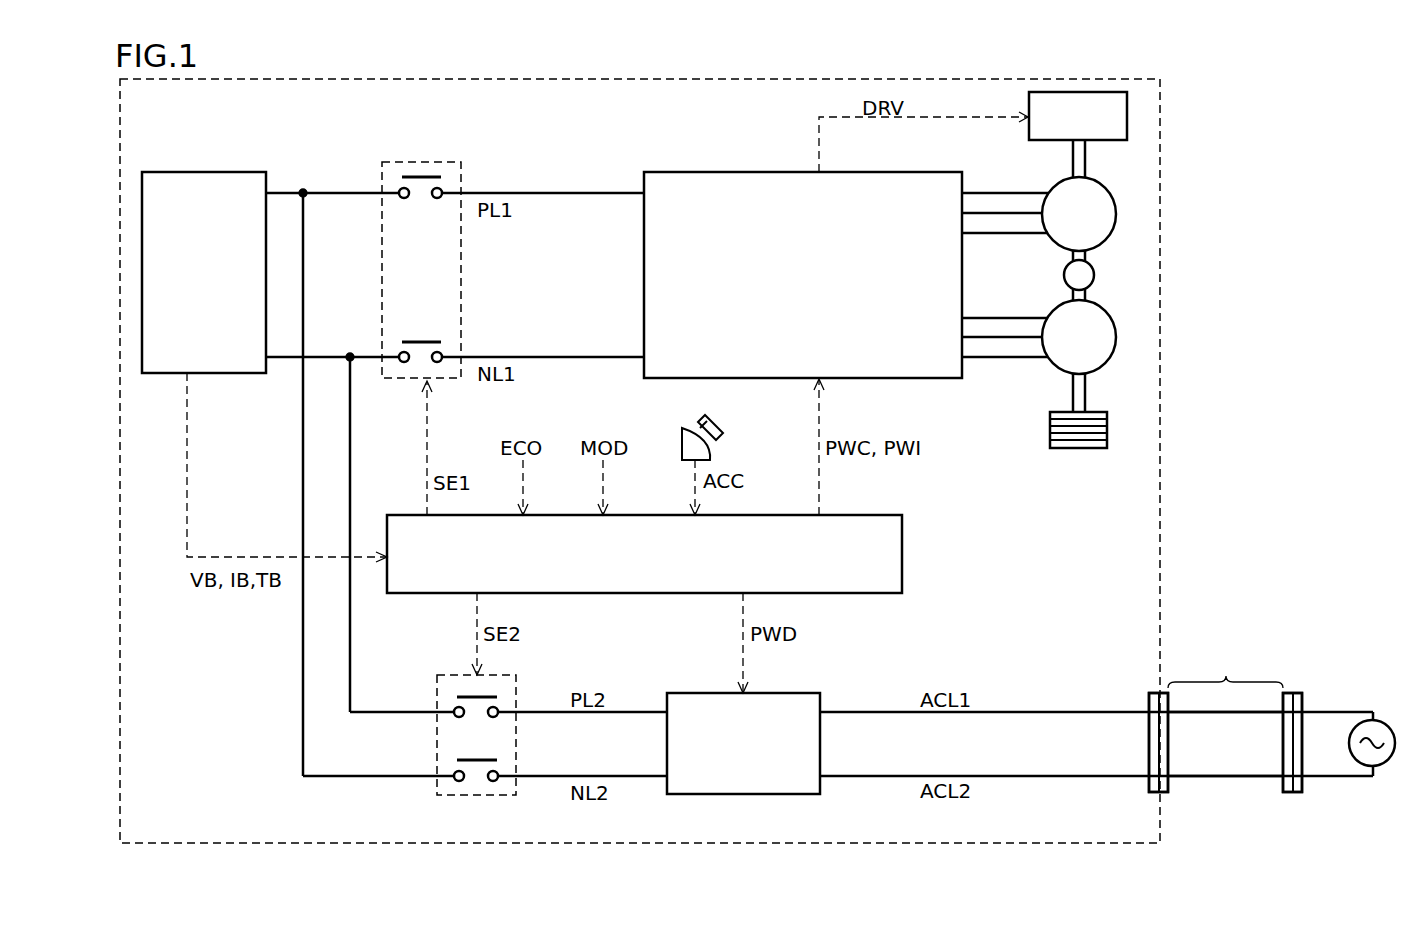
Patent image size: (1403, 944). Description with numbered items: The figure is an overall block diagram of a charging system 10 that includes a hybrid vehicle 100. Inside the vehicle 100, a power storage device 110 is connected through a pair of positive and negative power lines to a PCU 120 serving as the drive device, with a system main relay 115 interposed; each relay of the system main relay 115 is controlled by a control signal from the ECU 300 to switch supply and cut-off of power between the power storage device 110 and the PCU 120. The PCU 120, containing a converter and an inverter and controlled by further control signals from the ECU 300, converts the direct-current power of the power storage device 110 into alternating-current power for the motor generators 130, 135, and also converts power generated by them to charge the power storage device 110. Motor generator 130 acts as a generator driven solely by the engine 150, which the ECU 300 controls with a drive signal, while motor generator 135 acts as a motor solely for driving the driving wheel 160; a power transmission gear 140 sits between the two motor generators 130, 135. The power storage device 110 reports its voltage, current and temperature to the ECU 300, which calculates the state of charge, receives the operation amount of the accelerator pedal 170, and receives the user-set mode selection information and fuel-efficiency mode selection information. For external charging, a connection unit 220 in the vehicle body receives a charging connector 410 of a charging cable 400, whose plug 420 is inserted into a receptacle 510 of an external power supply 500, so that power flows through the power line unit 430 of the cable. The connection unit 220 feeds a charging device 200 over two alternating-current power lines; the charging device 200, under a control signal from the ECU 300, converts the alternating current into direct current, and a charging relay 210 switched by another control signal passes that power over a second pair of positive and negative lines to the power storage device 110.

The charging system 10 is at (1294, 77).
The hybrid vehicle 100 is at (1066, 79).
The power storage device 110 is at (227, 171).
The system main relay 115 is at (455, 162).
The PCU 120 is at (892, 171).
The motor generator 130 is at (1112, 190).
The motor generator 135 is at (1112, 362).
The power transmission gear 140 is at (1095, 275).
The engine 150 is at (1029, 100).
The driving wheel 160 is at (1082, 448).
The accelerator pedal 170 is at (712, 420).
The charging device 200 is at (778, 693).
The charging relay 210 is at (505, 675).
The connection unit 220 is at (1150, 693).
The ECU 300 is at (863, 515).
The charging cable 400 is at (1225, 670).
The charging connector 410 is at (1168, 792).
The plug 420 is at (1283, 792).
The power line unit 430 is at (1230, 700).
The external power supply 500 is at (1383, 720).
The receptacle 510 is at (1302, 792).